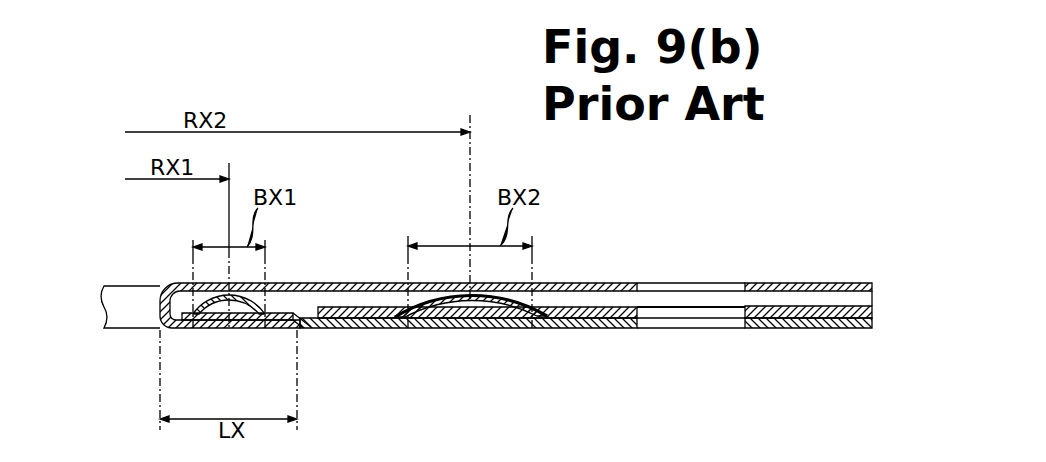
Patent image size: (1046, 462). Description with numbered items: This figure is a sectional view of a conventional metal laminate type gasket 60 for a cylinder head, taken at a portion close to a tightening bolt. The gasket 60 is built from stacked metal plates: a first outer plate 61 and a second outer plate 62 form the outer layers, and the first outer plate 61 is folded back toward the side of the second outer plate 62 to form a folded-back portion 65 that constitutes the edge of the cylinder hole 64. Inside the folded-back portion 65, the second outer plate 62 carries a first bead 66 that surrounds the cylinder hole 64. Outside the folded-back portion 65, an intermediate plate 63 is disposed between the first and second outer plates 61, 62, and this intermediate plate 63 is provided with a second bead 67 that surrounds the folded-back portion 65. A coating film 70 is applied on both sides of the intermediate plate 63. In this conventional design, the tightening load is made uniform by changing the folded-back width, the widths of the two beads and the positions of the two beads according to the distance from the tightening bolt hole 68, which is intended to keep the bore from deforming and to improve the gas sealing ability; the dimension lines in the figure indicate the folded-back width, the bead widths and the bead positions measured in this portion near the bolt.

The metal laminate type gasket 60 is at (683, 253).
The first outer plate 61 is at (321, 283).
The second outer plate 62 is at (548, 328).
The intermediate plate 63 is at (355, 328).
The cylinder hole 64 is at (141, 306).
The folded-back portion 65 is at (200, 326).
The first bead 66 is at (240, 304).
The second bead 67 is at (470, 305).
The tightening bolt hole 68 is at (712, 283).
The coating film 70 is at (596, 283).